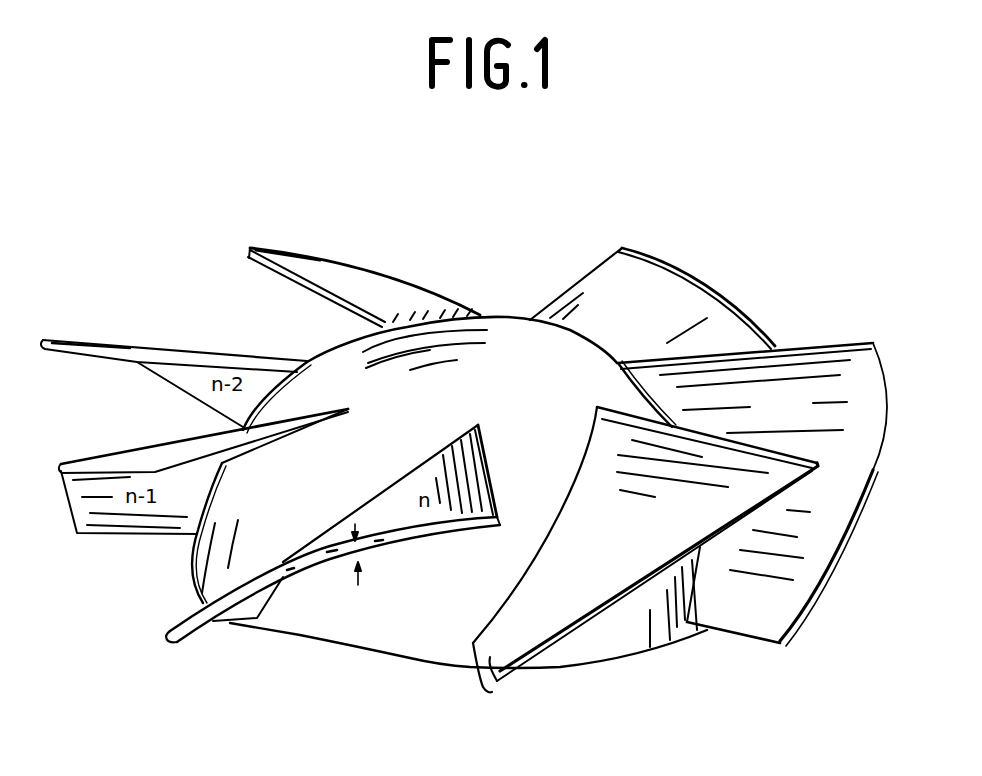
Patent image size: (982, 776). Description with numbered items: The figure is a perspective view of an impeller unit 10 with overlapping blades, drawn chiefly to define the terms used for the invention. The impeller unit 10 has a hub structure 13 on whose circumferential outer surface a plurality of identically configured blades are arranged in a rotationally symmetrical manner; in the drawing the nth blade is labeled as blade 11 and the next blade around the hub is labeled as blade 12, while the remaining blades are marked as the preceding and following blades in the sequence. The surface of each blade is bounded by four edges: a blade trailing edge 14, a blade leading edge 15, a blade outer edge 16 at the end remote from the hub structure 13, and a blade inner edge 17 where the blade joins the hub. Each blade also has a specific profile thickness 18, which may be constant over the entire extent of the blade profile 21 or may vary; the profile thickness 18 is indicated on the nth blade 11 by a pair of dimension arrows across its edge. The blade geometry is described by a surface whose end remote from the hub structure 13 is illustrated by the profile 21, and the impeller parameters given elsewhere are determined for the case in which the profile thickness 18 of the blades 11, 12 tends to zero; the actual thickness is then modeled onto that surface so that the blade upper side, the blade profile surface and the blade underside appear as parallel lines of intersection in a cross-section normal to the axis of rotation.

The impeller unit 10 is at (520, 273).
The nth blade 11 is at (213, 622).
The (n+1)th blade 12 is at (490, 657).
The hub structure 13 is at (350, 355).
The blade trailing edge 14 is at (727, 637).
The blade leading edge 15 is at (798, 343).
The blade outer edge 16 is at (860, 503).
The blade inner edge 17 is at (558, 523).
The profile thickness 18 is at (360, 552).
The blade profile 21 is at (278, 578).